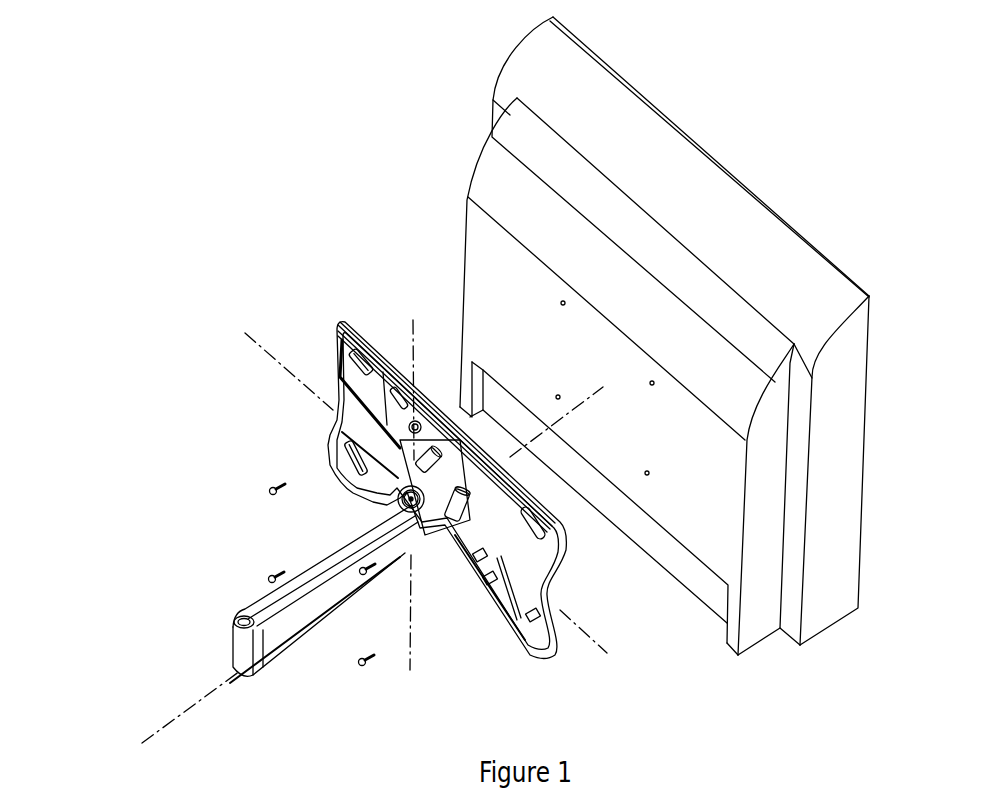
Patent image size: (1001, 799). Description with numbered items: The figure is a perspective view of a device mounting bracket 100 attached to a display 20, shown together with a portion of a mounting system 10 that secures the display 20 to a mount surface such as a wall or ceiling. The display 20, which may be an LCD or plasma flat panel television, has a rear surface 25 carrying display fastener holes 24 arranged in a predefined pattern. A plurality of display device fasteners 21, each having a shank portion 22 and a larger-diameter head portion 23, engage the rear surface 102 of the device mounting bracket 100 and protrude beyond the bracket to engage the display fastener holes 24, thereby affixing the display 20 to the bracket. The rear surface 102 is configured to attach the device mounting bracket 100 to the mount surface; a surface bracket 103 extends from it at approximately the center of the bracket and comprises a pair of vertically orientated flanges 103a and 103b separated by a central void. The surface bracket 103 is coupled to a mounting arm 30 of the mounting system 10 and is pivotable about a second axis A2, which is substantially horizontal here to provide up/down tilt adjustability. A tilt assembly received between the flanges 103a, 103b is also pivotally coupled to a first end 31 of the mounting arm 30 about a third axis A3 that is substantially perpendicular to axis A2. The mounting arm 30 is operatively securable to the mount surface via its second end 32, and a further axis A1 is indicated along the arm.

The mounting system 10 is at (172, 362).
The display 20 is at (843, 427).
The display device fasteners 21 is at (418, 613).
The shank portion 22 is at (395, 683).
The head portion 23 is at (358, 665).
The display fastener holes 24 is at (408, 258).
The rear surface 25 is at (482, 237).
The mounting arm 30 is at (332, 602).
The first end 31 is at (408, 507).
The second end 32 is at (245, 678).
The device mounting bracket 100 is at (337, 325).
The rear surface 102 is at (538, 633).
The surface bracket 103 is at (447, 508).
The flange 103a is at (455, 424).
The flange 103b is at (465, 503).
The first axis A1 is at (355, 575).
The second axis A2 is at (426, 493).
The third axis A3 is at (426, 491).